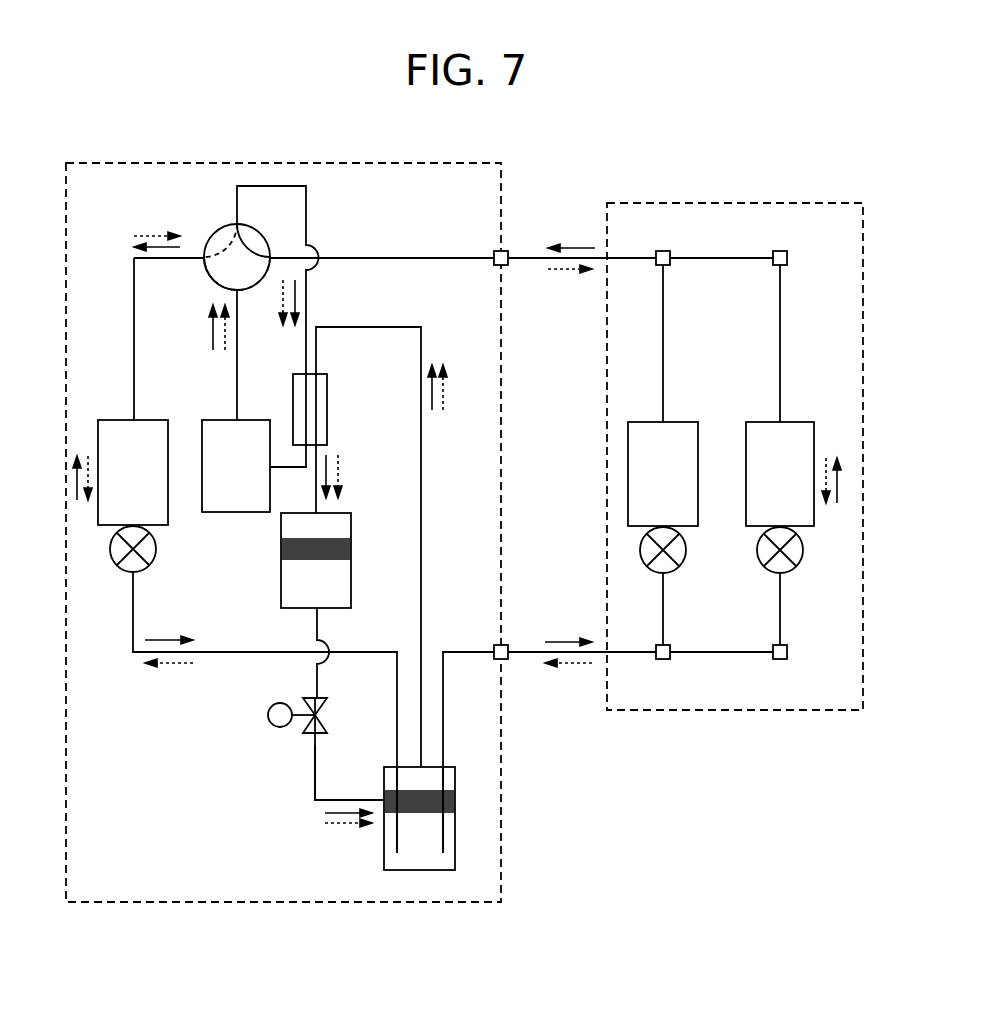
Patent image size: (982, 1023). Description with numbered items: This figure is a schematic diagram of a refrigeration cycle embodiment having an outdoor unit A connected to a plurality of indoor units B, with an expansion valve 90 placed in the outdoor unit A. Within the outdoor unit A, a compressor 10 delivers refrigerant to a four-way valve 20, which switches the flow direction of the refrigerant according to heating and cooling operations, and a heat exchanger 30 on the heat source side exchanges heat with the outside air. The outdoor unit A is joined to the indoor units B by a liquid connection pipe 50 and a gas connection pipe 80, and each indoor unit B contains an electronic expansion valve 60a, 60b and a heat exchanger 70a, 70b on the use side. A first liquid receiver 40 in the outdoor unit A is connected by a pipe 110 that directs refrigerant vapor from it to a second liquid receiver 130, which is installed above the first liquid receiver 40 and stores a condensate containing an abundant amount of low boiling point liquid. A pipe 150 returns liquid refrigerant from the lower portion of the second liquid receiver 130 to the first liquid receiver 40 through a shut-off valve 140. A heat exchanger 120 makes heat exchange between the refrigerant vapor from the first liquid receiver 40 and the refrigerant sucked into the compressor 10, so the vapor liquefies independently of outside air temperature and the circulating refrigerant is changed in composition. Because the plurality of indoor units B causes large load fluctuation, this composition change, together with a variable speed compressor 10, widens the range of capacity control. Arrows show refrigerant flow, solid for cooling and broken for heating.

The compressor 10 is at (228, 512).
The four-way valve 20 is at (218, 236).
The heat exchanger on a heat source side 30 is at (148, 420).
The first liquid receiver 40 is at (384, 840).
The liquid connection pipe 50 is at (525, 652).
The electronic expansion valve 60a is at (675, 570).
The electronic expansion valve 60b is at (792, 570).
The heat exchanger on a use side 70a is at (680, 422).
The heat exchanger on a use side 70b is at (797, 422).
The gas connection pipe 80 is at (525, 258).
The expansion valve in the outdoor unit 90 is at (115, 562).
The pipe for directing refrigerant vapor 110 is at (421, 477).
The heat exchanger 120 is at (327, 408).
The second liquid receiver 130 is at (281, 590).
The shut-off valve 140 is at (268, 715).
The pipe for directing liquid refrigerant 150 is at (315, 775).
The outdoor unit A is at (190, 902).
The indoor unit B is at (805, 710).